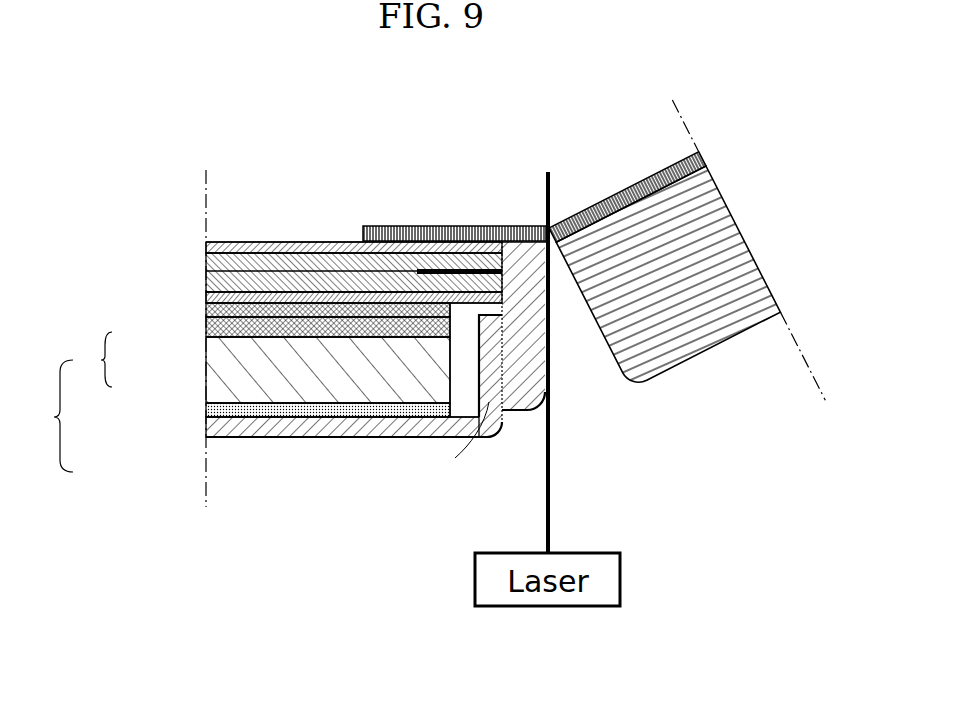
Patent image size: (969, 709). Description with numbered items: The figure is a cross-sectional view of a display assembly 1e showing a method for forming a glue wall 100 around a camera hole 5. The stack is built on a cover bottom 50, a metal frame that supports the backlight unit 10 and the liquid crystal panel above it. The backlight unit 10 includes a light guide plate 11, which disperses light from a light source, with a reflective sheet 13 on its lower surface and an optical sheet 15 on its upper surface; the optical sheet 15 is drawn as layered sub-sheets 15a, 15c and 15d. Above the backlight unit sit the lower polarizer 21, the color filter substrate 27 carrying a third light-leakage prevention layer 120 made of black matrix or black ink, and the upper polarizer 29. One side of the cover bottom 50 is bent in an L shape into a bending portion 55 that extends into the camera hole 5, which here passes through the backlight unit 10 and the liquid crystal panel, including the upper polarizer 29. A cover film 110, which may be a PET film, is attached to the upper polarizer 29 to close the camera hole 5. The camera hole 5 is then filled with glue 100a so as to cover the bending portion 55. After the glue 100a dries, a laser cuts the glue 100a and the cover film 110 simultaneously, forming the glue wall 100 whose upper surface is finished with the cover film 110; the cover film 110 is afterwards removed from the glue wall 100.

The display device 1e is at (228, 135).
The upper polarizer 29 is at (205, 246).
The color filter substrate 27 is at (205, 270).
The lower polarizer 21 is at (205, 297).
The optical sheet 15 is at (95, 359).
The third buffer sub-layer 15c is at (205, 310).
The fourth buffer sub-layer 15d is at (205, 327).
The first buffer sub-layer 15a is at (205, 370).
The backlight unit 10 is at (52, 416).
The light guide plate 11 is at (205, 410).
The reflective sheet 13 is at (205, 428).
The cover bottom 50 is at (207, 436).
The bending portion 55 is at (490, 437).
The glue wall 100 is at (523, 373).
The glue 100a is at (745, 251).
The cover film 110 is at (500, 225).
The third light-leakage prevention layer 120 is at (460, 225).
The camera hole 5 is at (505, 330).